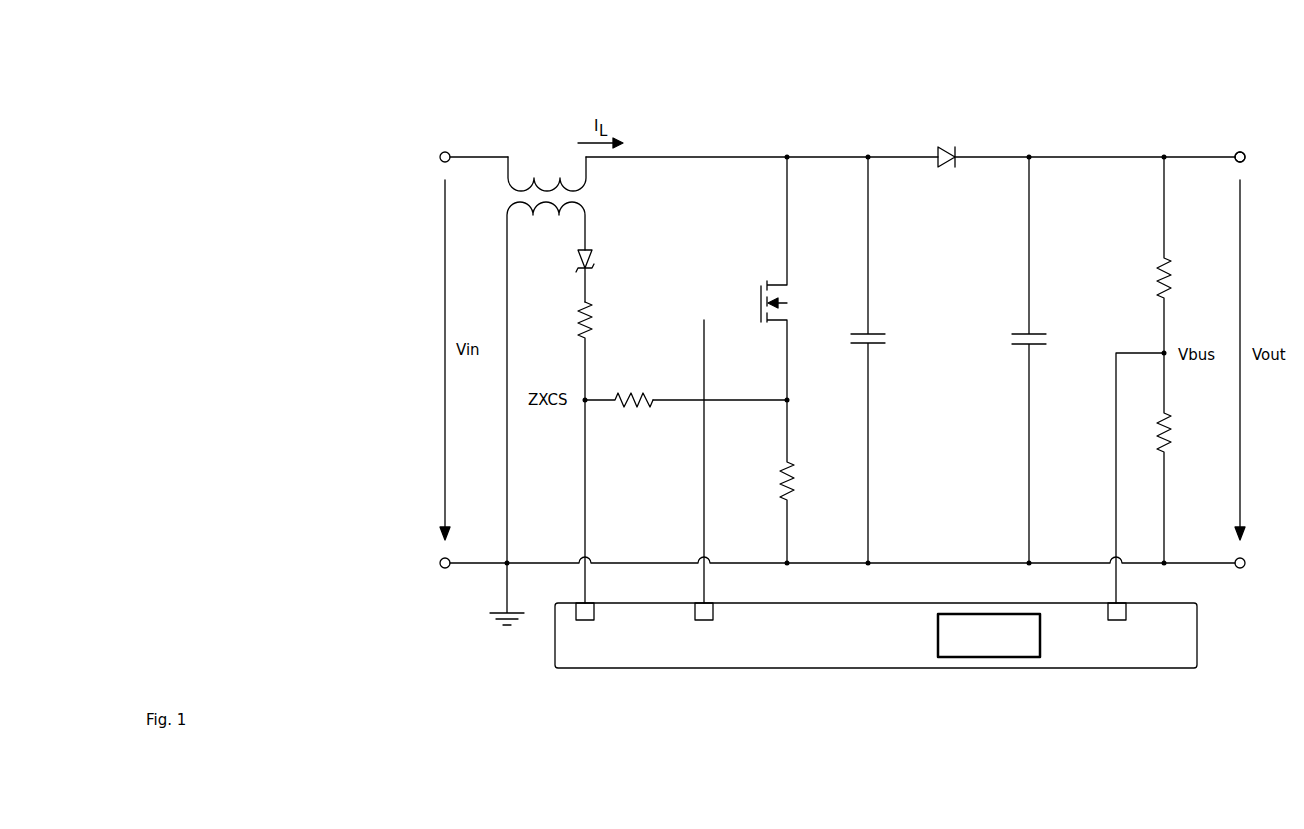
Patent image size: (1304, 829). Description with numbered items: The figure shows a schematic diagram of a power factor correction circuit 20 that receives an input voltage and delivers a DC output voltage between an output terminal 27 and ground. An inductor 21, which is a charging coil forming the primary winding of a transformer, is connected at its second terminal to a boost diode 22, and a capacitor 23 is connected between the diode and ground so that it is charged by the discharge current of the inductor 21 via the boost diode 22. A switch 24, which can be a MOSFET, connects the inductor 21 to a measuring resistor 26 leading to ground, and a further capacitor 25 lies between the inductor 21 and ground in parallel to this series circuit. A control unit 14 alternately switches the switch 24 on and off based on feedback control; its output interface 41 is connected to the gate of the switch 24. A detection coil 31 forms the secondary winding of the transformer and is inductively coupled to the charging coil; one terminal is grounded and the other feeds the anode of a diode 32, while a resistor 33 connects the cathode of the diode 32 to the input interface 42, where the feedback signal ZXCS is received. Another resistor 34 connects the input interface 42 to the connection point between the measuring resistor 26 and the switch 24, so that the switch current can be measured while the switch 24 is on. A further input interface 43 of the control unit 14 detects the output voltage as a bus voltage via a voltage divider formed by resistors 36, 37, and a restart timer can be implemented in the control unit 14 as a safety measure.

The power factor correction circuit 20 is at (478, 88).
The inductor 21 is at (553, 164).
The boost diode 22 is at (952, 150).
The capacitor 23 is at (1051, 320).
The switch 24 is at (755, 281).
The further capacitor 25 is at (896, 322).
The measuring resistor 26 is at (792, 463).
The output terminal 27 is at (1242, 150).
The detection coil 31 is at (535, 229).
The diode 32 is at (592, 254).
The resistor 33 is at (592, 306).
The resistor 34 is at (622, 394).
The resistor 36 is at (1166, 262).
The resistor 37 is at (1166, 414).
The control unit 14 is at (866, 651).
The output interface 41 is at (708, 621).
The input interface 42 is at (588, 621).
The further input interface 43 is at (1120, 621).